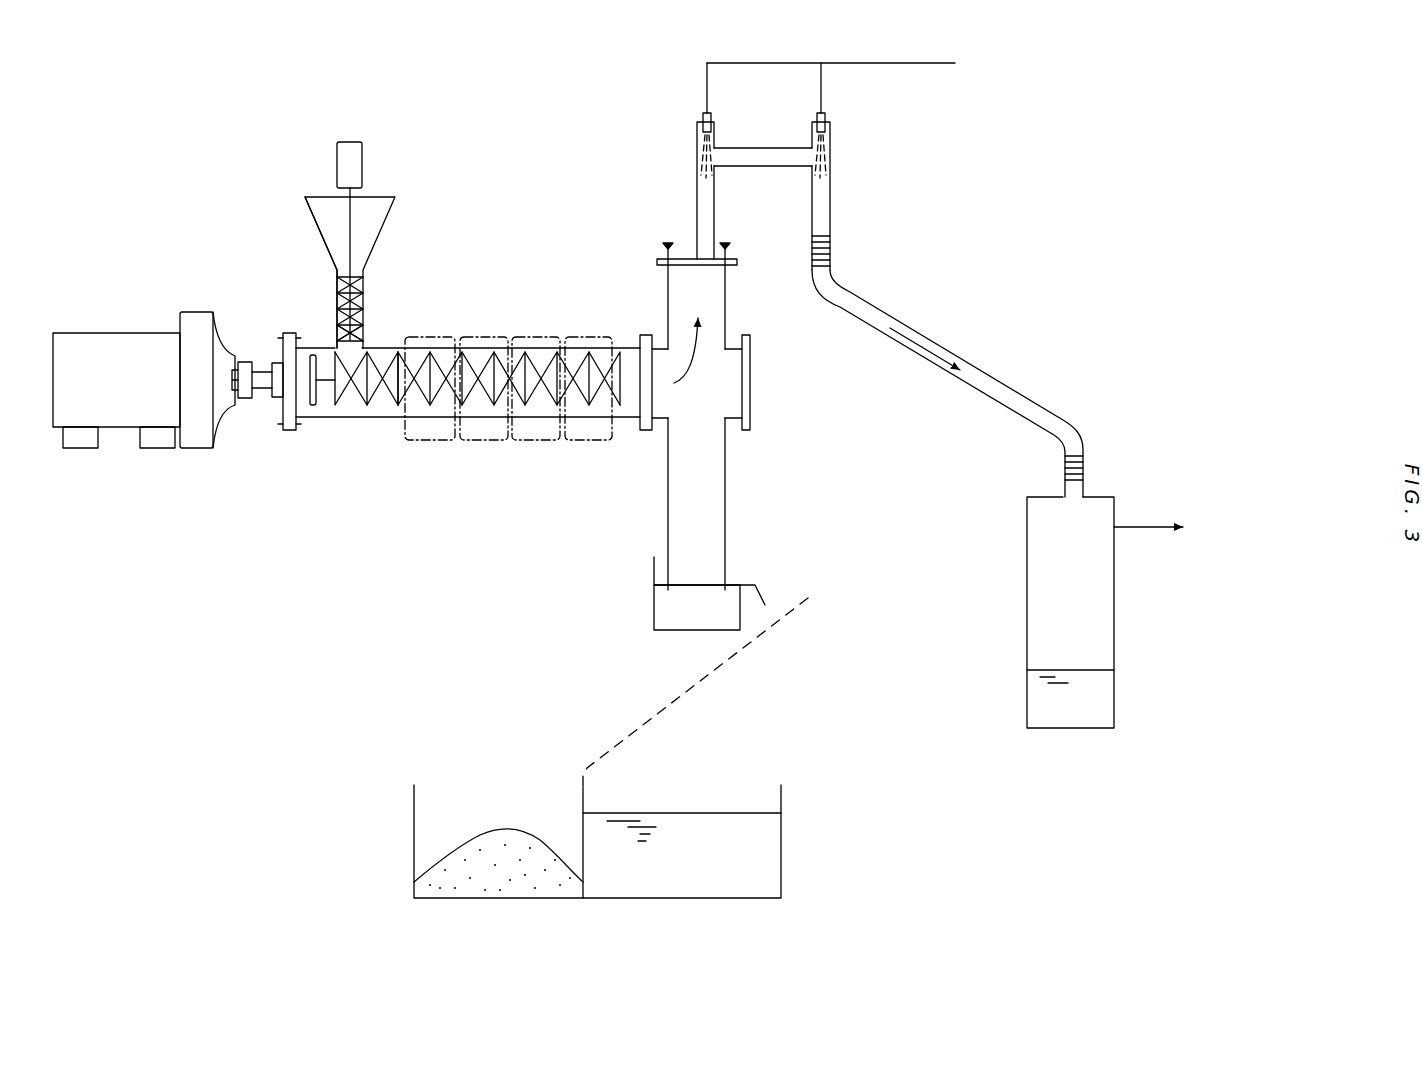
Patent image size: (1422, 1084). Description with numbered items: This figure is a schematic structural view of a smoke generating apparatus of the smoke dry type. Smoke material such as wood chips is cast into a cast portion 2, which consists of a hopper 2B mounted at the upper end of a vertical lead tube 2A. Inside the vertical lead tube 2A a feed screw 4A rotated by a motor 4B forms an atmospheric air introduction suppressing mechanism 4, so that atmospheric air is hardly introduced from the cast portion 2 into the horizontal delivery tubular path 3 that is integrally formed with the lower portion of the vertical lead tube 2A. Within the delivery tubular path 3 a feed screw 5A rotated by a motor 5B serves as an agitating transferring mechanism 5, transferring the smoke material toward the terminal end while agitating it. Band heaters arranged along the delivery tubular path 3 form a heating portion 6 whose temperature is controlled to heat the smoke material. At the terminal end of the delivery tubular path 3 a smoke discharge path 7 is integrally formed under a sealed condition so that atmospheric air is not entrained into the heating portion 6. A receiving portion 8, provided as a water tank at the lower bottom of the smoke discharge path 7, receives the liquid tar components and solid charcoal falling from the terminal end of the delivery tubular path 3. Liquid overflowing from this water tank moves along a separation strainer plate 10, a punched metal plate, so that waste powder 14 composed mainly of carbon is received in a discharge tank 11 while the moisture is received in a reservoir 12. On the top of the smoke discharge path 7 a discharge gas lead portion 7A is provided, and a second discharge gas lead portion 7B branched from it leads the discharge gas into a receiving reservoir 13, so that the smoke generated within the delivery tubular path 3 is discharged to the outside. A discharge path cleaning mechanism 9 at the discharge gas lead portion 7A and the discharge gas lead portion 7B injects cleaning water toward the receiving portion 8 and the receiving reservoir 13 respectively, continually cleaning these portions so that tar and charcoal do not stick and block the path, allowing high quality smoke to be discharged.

The cast portion 2 is at (398, 228).
The vertical lead tube 2A is at (337, 302).
The hopper 2B is at (316, 224).
The delivery tubular path 3 is at (366, 418).
The atmospheric air introduction suppressing mechanism 4 is at (367, 305).
The feed screw 4A is at (357, 322).
The motor 4B is at (352, 168).
The agitating transferring mechanism 5 is at (345, 405).
The feed screw 5A is at (398, 402).
The motor 5B is at (123, 345).
The heating portion 6 is at (542, 316).
The smoke discharge path 7 is at (733, 312).
The discharge gas lead portion 7A is at (697, 197).
The discharge gas lead portion 7B is at (830, 205).
The receiving portion 8 is at (646, 607).
The discharge path cleaning mechanism 9 is at (745, 128).
The separation strainer plate 10 is at (718, 672).
The discharge tank 11 is at (414, 810).
The reservoir 12 is at (781, 818).
The receiving reservoir 13 is at (1027, 580).
The waste powder 14 is at (497, 830).